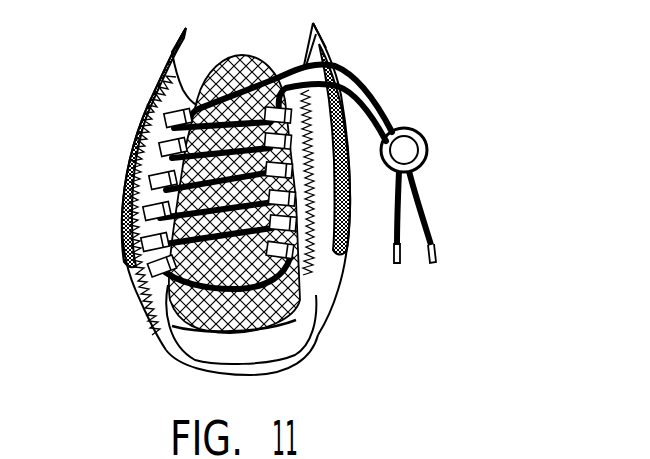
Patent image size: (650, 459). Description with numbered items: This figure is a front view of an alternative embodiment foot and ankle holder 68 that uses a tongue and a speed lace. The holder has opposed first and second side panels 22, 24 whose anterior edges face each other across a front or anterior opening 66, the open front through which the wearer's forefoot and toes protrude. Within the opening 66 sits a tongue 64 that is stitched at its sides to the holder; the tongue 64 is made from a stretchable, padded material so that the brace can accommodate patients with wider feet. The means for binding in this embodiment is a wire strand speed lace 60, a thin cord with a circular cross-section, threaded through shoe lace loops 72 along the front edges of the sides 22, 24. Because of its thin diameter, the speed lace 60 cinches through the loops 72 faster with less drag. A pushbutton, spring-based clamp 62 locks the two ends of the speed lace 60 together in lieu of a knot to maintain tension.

The first side panel 22 is at (340, 57).
The second side panel 24 is at (137, 127).
The wire strand speed lace 60 is at (428, 208).
The pushbutton, spring-based clamp 62 is at (428, 146).
The tongue 64 is at (243, 53).
The front opening 66 is at (240, 337).
The foot and ankle holder 68 is at (152, 277).
The shoe lace loops 72 is at (150, 146).